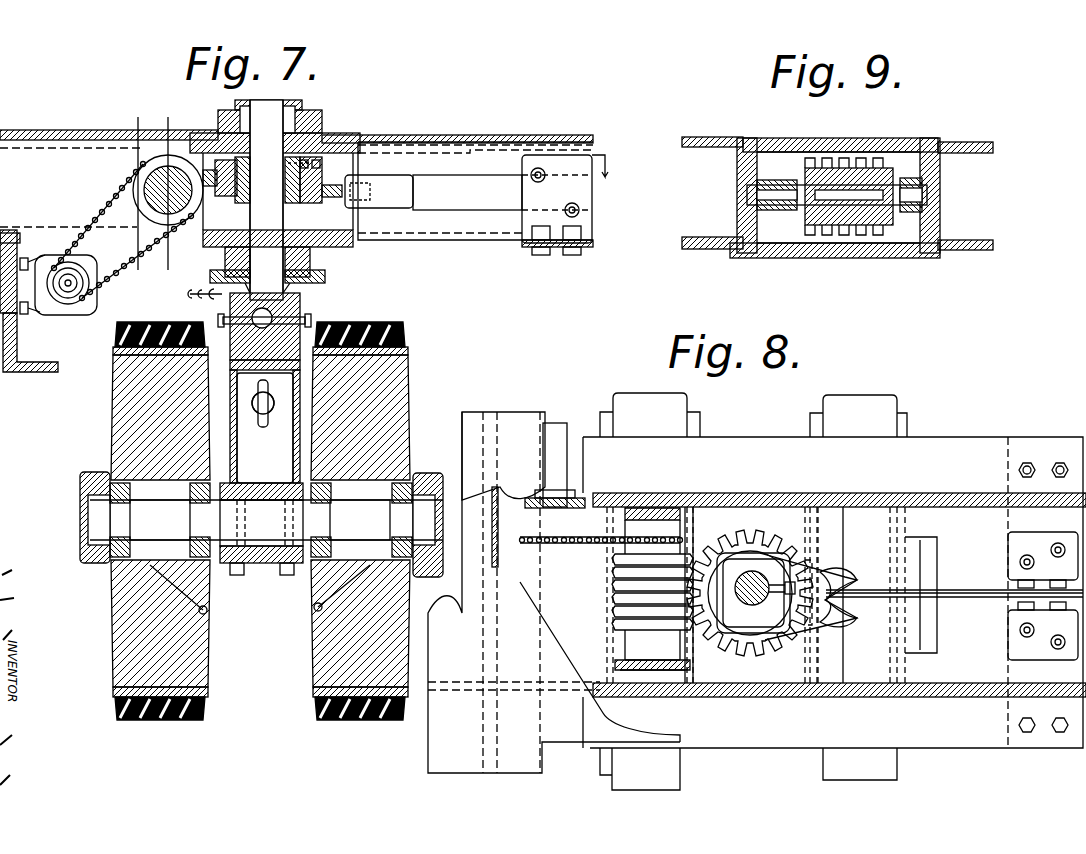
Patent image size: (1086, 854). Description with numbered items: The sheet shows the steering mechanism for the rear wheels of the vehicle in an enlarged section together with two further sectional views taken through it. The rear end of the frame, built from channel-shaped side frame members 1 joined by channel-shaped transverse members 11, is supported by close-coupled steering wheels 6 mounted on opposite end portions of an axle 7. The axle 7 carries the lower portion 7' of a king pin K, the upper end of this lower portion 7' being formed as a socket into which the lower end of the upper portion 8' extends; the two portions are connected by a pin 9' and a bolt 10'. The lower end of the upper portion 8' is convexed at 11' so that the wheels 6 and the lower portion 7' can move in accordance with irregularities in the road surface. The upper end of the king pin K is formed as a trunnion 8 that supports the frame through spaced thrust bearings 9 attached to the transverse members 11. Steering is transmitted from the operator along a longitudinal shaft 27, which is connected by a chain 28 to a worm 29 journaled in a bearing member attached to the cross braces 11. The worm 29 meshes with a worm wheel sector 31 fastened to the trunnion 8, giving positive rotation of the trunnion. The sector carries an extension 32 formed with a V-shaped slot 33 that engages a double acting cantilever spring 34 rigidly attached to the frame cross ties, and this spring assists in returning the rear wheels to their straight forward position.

In FIG. 7, the side frame member 1 is at (30, 373).
In FIG. 8, the side frame member 1 is at (554, 592).
In FIG. 7, the steering wheel 6 is at (130, 668).
In FIG. 7, the axle 7 is at (261, 524).
In FIG. 7, the lower portion of king pin 7' is at (253, 426).
In FIG. 7, the trunnion 8 is at (267, 196).
In FIG. 7, the upper portion of king pin 8' is at (271, 323).
In FIG. 8, the upper portion of king pin 8' is at (765, 618).
In FIG. 7, the thrust bearing 9 is at (296, 184).
In FIG. 7, the pin 9' is at (249, 308).
In FIG. 7, the bolt 10' is at (354, 303).
In FIG. 9, the transverse member 11 is at (837, 197).
In FIG. 8, the transverse member 11 is at (834, 591).
In FIG. 7, the convexed lower end 11' is at (277, 376).
In FIG. 7, the shaft 27 is at (68, 283).
In FIG. 8, the shaft 27 is at (558, 428).
In FIG. 7, the chain 28 is at (110, 184).
In FIG. 8, the chain 28 is at (590, 560).
In FIG. 7, the worm 29 is at (148, 160).
In FIG. 9, the worm 29 is at (835, 232).
In FIG. 8, the worm 29 is at (640, 618).
In FIG. 7, the worm wheel sector 31 is at (222, 200).
In FIG. 8, the worm wheel sector 31 is at (760, 552).
In FIG. 7, the extension 32 is at (330, 197).
In FIG. 8, the extension 32 is at (840, 568).
In FIG. 7, the V-shaped slot 33 is at (345, 170).
In FIG. 8, the V-shaped slot 33 is at (858, 595).
In FIG. 7, the double acting cantilever spring 34 is at (477, 198).
In FIG. 8, the double acting cantilever spring 34 is at (958, 600).
In FIG. 7, the king pin K is at (305, 343).